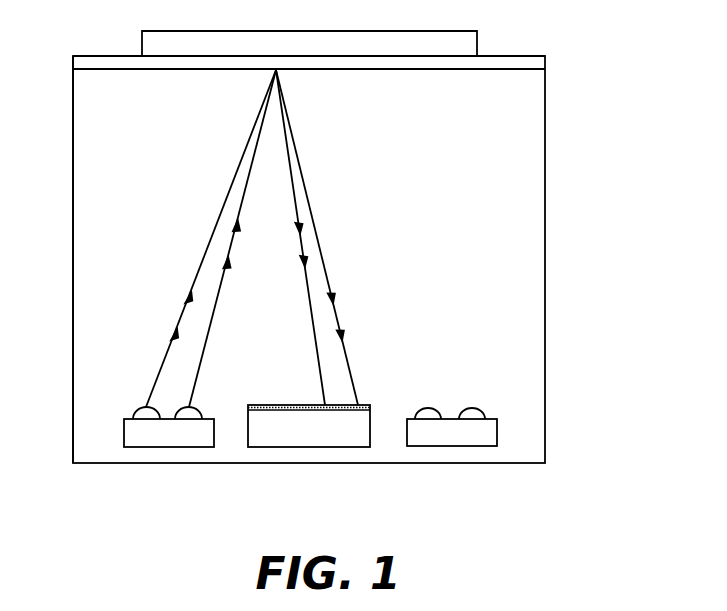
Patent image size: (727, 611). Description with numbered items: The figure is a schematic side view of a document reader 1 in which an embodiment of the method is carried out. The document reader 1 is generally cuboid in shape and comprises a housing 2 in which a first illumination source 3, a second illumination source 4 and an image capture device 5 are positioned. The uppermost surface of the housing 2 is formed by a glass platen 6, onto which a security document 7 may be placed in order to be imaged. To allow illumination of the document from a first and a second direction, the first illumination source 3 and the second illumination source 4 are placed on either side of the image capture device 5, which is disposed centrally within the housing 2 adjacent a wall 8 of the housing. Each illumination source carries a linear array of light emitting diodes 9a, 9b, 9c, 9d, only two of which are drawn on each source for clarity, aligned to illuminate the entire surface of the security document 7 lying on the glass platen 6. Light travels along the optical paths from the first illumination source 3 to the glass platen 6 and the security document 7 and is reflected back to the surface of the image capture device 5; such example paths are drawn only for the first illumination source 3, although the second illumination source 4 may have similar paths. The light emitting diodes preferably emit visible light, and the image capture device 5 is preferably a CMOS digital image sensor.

The document reader 1 is at (345, 263).
The housing 2 is at (545, 318).
The first illumination source 3 is at (131, 451).
The second illumination source 4 is at (503, 438).
The image capture device 5 is at (303, 447).
The glass platen 6 is at (545, 62).
The security document 7 is at (477, 43).
The wall 8 is at (73, 308).
The light emitting diode 9a is at (135, 410).
The light emitting diode 9b is at (198, 410).
The light emitting diode 9c is at (430, 408).
The light emitting diode 9d is at (474, 408).